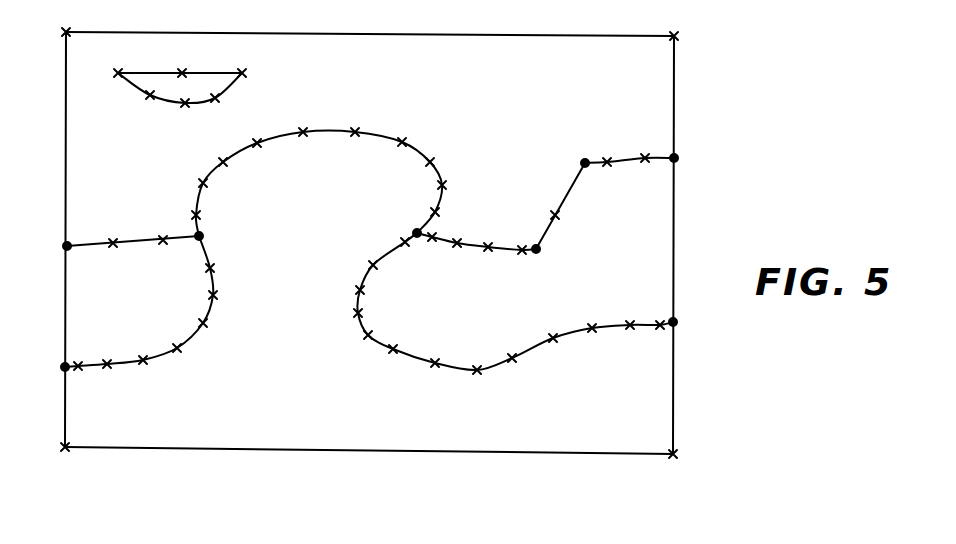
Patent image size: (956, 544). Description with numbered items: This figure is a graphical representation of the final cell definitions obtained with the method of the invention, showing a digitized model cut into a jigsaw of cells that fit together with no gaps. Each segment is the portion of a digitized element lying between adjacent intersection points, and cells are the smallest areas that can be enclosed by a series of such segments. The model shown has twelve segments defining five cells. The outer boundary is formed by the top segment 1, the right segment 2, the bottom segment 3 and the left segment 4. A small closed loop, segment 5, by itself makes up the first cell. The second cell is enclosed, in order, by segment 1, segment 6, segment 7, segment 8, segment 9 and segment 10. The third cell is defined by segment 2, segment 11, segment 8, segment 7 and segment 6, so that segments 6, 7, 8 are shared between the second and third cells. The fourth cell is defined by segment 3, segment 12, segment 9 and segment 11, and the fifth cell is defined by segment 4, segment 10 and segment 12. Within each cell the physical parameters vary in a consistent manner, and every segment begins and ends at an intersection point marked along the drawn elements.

The segment 1 is at (370, 26).
The segment 2 is at (598, 247).
The segment 3 is at (367, 363).
The segment 4 is at (175, 239).
The segment 5 is at (180, 181).
The segment 6 is at (629, 152).
The segment 7 is at (558, 208).
The segment 8 is at (474, 238).
The segment 9 is at (319, 171).
The segment 10 is at (133, 235).
The segment 11 is at (515, 303).
The segment 12 is at (139, 303).